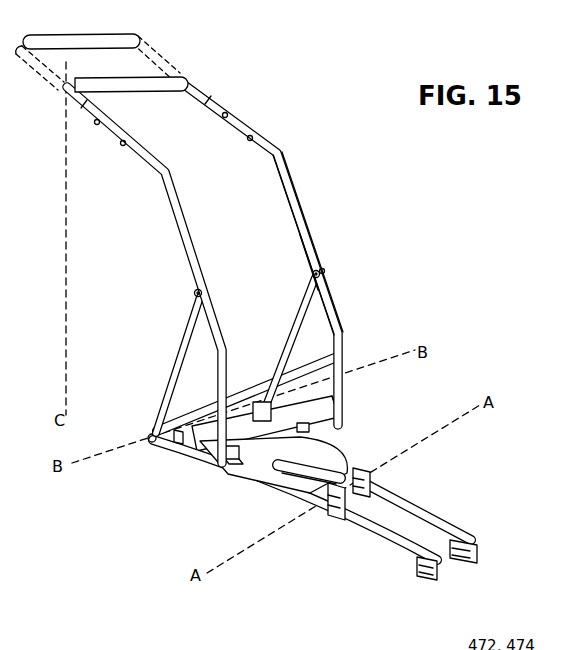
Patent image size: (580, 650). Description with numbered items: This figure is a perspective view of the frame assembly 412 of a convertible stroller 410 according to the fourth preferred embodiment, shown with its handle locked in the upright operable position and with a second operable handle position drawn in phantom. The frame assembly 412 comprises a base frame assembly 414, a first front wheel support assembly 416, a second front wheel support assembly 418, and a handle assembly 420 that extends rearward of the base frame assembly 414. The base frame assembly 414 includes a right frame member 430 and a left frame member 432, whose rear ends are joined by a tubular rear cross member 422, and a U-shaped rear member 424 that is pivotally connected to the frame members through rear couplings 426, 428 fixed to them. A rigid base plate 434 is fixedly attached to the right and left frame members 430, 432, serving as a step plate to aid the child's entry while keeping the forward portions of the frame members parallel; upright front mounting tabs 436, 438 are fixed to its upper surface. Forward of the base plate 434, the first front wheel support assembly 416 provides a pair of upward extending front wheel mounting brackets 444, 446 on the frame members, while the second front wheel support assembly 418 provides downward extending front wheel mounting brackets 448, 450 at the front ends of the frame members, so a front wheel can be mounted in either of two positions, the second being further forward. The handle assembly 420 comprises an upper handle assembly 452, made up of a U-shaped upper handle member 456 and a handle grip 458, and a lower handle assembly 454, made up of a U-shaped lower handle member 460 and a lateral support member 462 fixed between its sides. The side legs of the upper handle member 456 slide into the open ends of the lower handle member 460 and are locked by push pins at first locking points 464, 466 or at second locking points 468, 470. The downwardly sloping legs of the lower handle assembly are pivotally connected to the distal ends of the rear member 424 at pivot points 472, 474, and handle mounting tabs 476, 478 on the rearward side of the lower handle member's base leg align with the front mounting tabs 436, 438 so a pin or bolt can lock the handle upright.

The convertible stroller 410 is at (479, 210).
The frame assembly 412 is at (270, 246).
The base frame assembly 414 is at (191, 458).
The first front wheel support assembly 416 is at (366, 500).
The second front wheel support assembly 418 is at (458, 572).
The handle assembly 420 is at (294, 190).
The rear cross member 422 is at (150, 432).
The U-shaped rear member 424 is at (182, 345).
The rear coupling 426 is at (173, 444).
The rear coupling 428 is at (274, 408).
The right frame member 430 is at (195, 462).
The left frame member 432 is at (385, 498).
The base plate 434 is at (335, 468).
The front mounting tab 436 is at (232, 457).
The front mounting tab 438 is at (334, 414).
The upward extending front wheel mounting bracket 444 is at (327, 511).
The upward extending front wheel mounting bracket 446 is at (362, 481).
The downward extending front wheel mounting bracket 448 is at (423, 582).
The downward extending front wheel mounting bracket 450 is at (476, 556).
The upper handle assembly 452 is at (207, 85).
The lower handle assembly 454 is at (312, 232).
The U-shaped upper handle member 456 is at (208, 97).
The handle grip 458 is at (167, 81).
The U-shaped lower handle member 460 is at (309, 253).
The lateral support member 462 is at (337, 357).
The first locking point 464 is at (124, 146).
The first locking point 466 is at (255, 138).
The second locking point 468 is at (96, 126).
The second locking point 470 is at (229, 116).
The pivot point 472 is at (193, 294).
The pivot point 474 is at (321, 273).
The handle mounting tab 476 is at (233, 455).
The handle mounting tab 478 is at (309, 428).